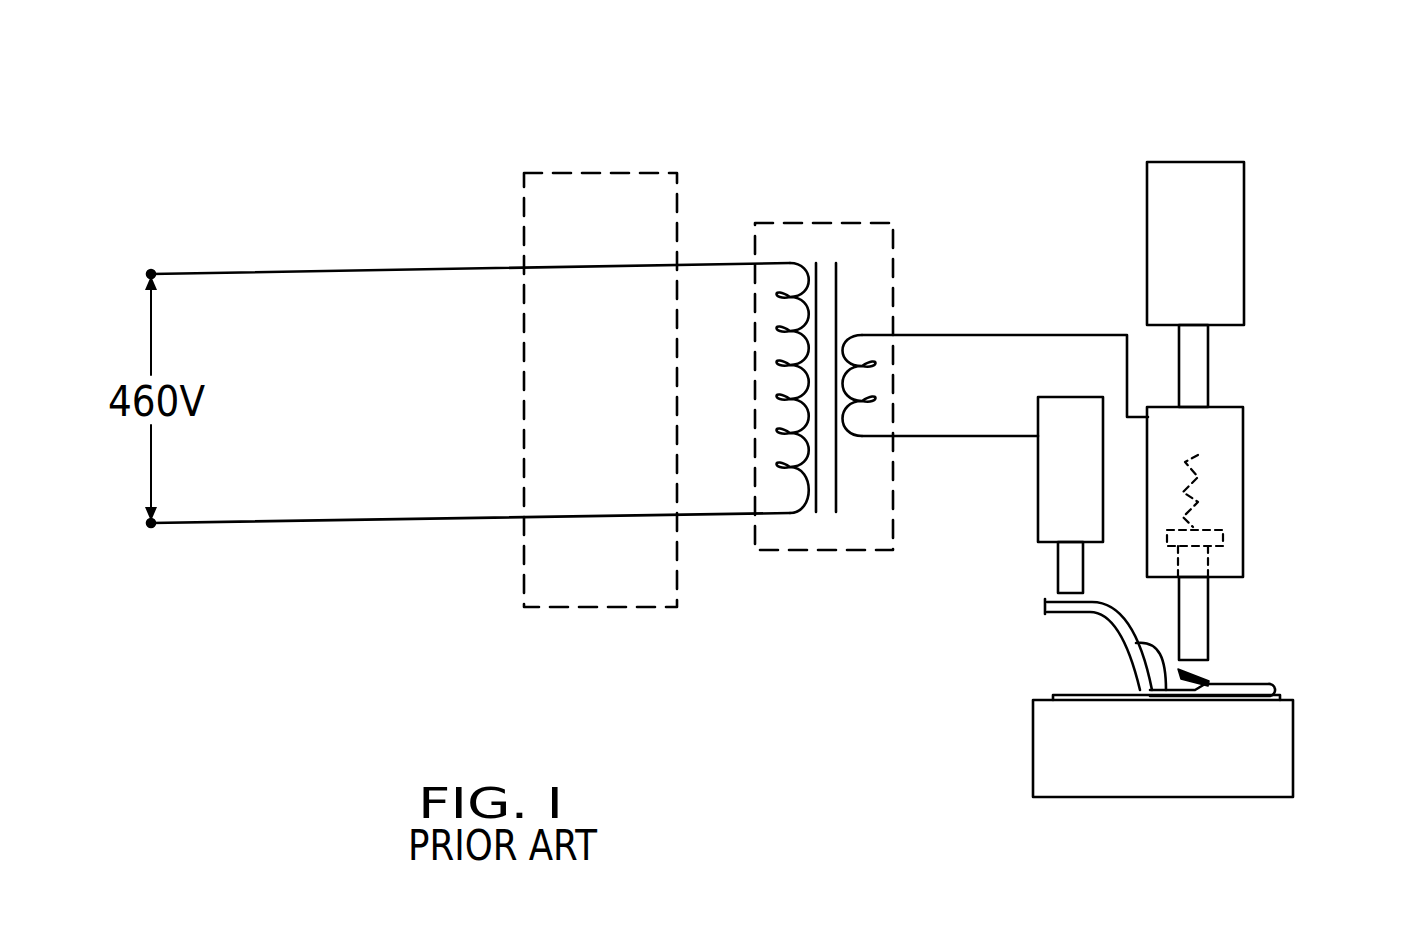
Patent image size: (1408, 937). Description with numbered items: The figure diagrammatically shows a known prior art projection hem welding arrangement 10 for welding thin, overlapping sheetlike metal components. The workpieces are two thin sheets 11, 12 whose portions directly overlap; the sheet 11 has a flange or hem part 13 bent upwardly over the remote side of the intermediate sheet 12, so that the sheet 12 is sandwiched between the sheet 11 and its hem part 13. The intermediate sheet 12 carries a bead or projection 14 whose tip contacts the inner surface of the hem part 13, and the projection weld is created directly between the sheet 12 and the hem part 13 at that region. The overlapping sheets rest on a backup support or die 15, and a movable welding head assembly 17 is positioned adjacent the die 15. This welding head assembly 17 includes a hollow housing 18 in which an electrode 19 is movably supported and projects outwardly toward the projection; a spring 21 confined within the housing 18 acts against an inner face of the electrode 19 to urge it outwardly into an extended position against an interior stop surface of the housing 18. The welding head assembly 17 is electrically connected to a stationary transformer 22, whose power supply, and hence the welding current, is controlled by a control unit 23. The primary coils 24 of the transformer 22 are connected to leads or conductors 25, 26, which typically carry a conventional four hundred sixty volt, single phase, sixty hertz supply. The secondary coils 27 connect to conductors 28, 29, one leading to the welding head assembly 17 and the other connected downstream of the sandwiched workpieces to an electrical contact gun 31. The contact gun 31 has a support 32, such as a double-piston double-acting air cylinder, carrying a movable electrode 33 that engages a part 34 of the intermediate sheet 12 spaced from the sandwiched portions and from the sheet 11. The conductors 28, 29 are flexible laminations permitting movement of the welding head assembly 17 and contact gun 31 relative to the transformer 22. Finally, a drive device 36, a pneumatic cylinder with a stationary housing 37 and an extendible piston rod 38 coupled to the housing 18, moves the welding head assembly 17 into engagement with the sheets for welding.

The welding arrangement 10 is at (863, 112).
The sheet 11 is at (1070, 697).
The sheet 12 is at (1135, 643).
The hem part 13 is at (1256, 683).
The projection 14 is at (1207, 676).
The die 15 is at (1270, 795).
The welding head assembly 17 is at (1252, 524).
The housing 18 is at (1235, 437).
The electrode 19 is at (1232, 593).
The spring 21 is at (1200, 508).
The transformer 22 is at (857, 382).
The control unit 23 is at (563, 172).
The primary coils 24 is at (802, 516).
The conductor 25 is at (205, 272).
The conductor 26 is at (205, 525).
The secondary coils 27 is at (855, 353).
The conductor 28 is at (1018, 330).
The conductor 29 is at (943, 438).
The contact gun 31 is at (1008, 527).
The support 32 is at (1055, 465).
The electrode 33 is at (1060, 552).
The part 34 is at (1060, 610).
The drive device 36 is at (1261, 195).
The housing 37 is at (1183, 183).
The piston rod 38 is at (1200, 355).